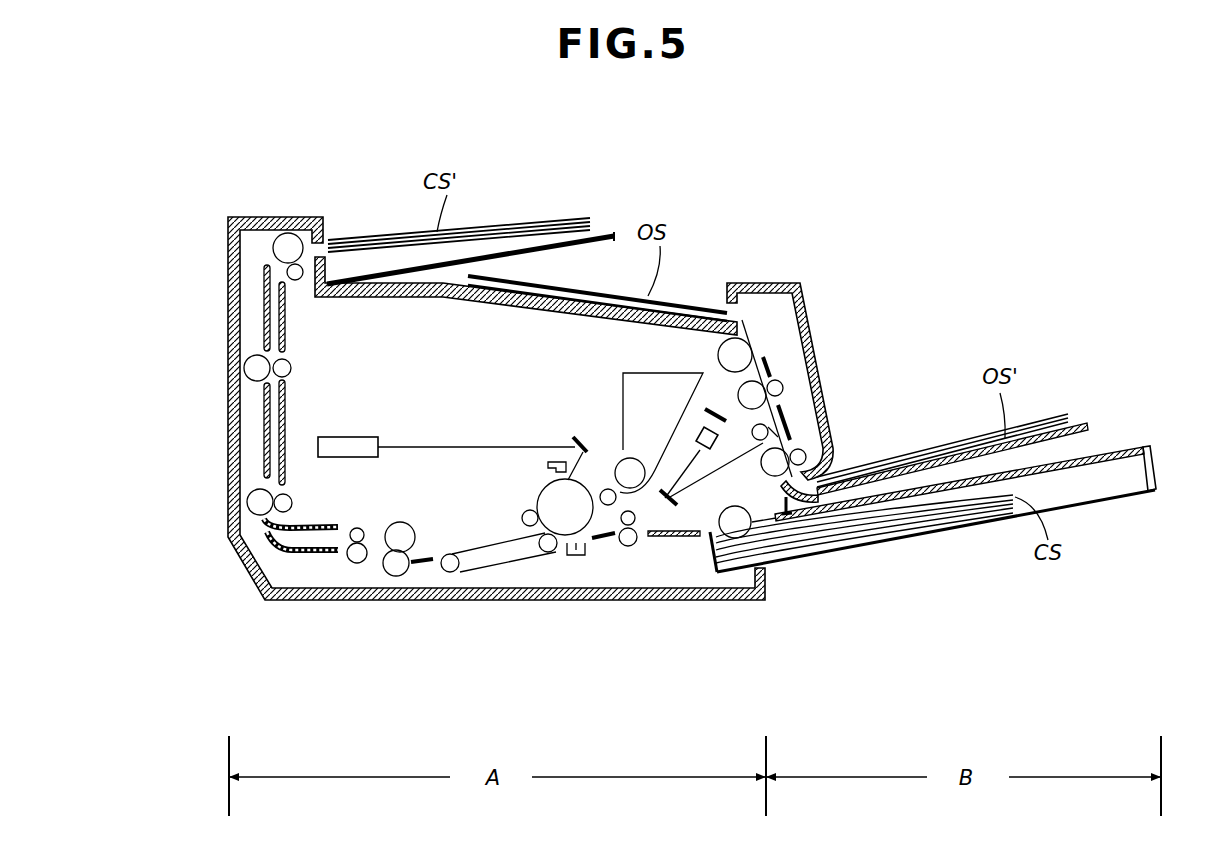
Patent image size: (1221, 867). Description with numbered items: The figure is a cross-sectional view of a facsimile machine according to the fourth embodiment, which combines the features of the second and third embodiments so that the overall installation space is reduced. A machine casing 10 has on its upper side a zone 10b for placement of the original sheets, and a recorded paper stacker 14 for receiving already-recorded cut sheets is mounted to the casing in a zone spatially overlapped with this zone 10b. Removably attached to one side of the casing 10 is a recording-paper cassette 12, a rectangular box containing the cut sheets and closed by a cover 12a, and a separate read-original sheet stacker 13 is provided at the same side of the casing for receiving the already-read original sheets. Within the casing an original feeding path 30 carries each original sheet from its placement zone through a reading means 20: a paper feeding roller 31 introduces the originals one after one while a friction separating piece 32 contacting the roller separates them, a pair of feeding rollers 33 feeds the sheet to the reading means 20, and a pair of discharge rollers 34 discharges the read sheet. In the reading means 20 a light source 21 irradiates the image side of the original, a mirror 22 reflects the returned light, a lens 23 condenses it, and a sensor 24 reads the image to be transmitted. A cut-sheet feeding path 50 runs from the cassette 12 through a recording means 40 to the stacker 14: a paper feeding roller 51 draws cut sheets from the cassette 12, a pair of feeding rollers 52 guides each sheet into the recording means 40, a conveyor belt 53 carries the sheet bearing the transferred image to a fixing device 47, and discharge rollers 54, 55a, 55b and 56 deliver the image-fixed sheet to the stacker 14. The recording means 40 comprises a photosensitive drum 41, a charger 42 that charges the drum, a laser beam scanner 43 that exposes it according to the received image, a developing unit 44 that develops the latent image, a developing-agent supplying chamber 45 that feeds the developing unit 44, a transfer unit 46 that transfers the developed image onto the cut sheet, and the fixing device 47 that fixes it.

The machine casing 10 is at (735, 600).
The zone for placement of the original sheets 10b is at (681, 287).
The recording-paper cassette 12 is at (1157, 478).
The cover 12a is at (1143, 446).
The read-original sheet stacker 13 is at (1082, 423).
The recorded paper stacker 14 is at (603, 232).
The reading means 20 is at (740, 427).
The light source 21 is at (770, 412).
The mirror 22 is at (677, 507).
The lens 23 is at (706, 438).
The sensor 24 is at (712, 410).
The original feeding path 30 is at (767, 342).
The paper feeding roller 31 is at (728, 355).
The friction separating piece 32 is at (753, 316).
The pair of feeding rollers 33 is at (777, 385).
The pair of discharge rollers 34 is at (798, 457).
The recording means 40 is at (547, 567).
The photosensitive drum 41 is at (553, 507).
The charger 42 is at (548, 467).
The laser beam scanner 43 is at (358, 457).
The developing unit 44 is at (603, 489).
The developing-agent supplying chamber 45 is at (630, 373).
The transfer unit 46 is at (577, 558).
The fixing device 47 is at (395, 576).
The cut-sheet feeding path 50 is at (298, 566).
The paper feeding roller 51 is at (737, 518).
The pair of feeding rollers 52 is at (630, 548).
The conveyor belt 53 is at (477, 560).
The discharge rollers 54 is at (355, 562).
The discharge rollers 55a is at (257, 500).
The discharge rollers 55b is at (257, 368).
The discharge rollers 56 is at (282, 248).